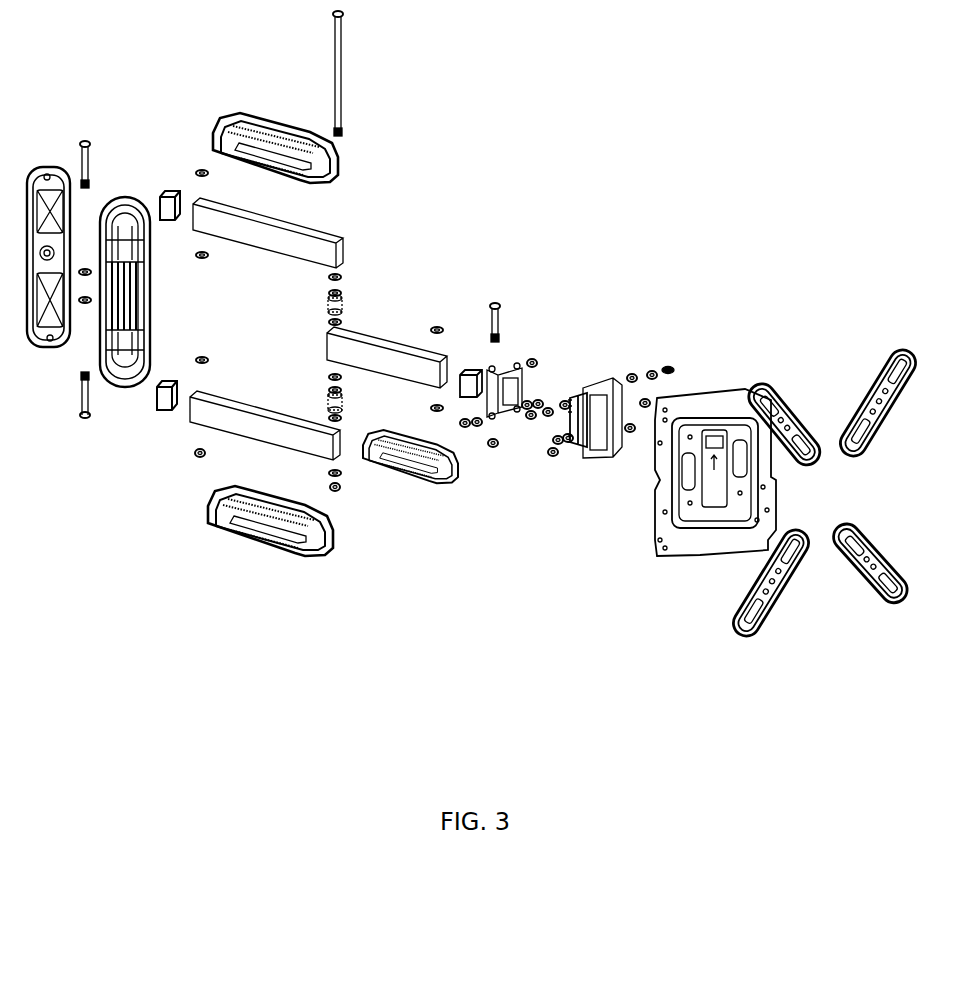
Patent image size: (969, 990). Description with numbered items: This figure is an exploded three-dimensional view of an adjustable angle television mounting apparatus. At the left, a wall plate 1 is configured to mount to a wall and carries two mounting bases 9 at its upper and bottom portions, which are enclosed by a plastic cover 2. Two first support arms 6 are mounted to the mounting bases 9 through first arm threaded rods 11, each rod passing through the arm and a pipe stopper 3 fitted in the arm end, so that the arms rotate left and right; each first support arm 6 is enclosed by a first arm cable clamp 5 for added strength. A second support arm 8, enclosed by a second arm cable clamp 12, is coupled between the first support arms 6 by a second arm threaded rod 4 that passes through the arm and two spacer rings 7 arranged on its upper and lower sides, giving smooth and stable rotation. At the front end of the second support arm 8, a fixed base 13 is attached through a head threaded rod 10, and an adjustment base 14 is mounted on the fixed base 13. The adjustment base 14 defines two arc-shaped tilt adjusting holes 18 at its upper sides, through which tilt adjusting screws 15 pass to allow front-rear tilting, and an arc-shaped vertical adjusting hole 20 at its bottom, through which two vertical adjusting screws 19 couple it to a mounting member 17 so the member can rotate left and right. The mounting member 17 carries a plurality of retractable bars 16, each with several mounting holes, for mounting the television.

The wall plate 1 is at (62, 240).
The plastic cover 2 is at (120, 205).
The pipe stopper 3 is at (160, 413).
The second arm threaded rod 4 is at (342, 62).
The first arm cable clamp 5 is at (262, 535).
The first support arm 6 is at (320, 230).
The spacer ring 7 is at (337, 303).
The second support arm 8 is at (393, 343).
The mounting base 9 is at (62, 240).
The head threaded rod 10 is at (503, 312).
The first arm threaded rod 11 is at (97, 143).
The second arm cable clamp 12 is at (417, 487).
The fixed base 13 is at (502, 403).
The adjustment base 14 is at (621, 382).
The tilt adjusting screw 15 is at (672, 368).
The retractable bar 16 is at (860, 405).
The mounting member 17 is at (712, 522).
The tilt adjusting hole 18 is at (576, 397).
The vertical adjusting screw 19 is at (570, 447).
The vertical adjusting hole 20 is at (613, 447).